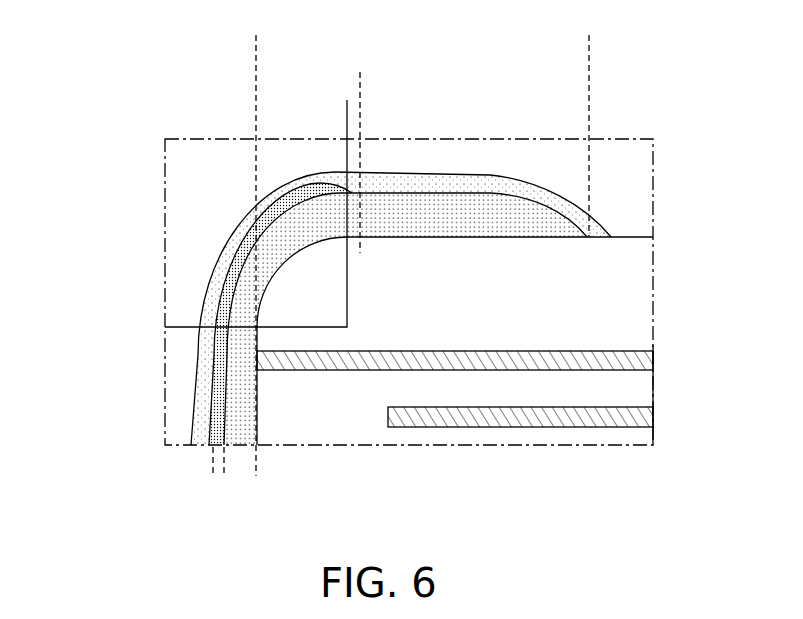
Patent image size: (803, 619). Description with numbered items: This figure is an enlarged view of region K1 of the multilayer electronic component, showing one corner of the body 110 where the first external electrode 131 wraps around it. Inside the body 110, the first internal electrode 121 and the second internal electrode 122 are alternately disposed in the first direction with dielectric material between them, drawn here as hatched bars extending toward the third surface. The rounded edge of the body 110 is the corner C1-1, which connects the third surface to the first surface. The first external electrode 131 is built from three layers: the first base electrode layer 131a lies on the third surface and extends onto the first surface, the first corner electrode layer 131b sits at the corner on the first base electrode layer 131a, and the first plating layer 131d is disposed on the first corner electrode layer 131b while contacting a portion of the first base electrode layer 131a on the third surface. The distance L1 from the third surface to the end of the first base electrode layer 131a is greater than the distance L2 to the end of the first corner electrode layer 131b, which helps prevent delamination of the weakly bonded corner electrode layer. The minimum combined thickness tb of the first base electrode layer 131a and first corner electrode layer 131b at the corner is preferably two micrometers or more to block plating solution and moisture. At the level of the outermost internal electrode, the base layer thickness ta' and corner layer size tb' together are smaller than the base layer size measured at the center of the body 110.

The body 110 is at (640, 287).
The first internal electrode 121 is at (638, 360).
The second internal electrode 122 is at (638, 417).
The first external electrode 131 is at (322, 308).
The first base electrode layer 131a is at (257, 228).
The first corner electrode layer 131b is at (240, 273).
The first plating layer 131d is at (80, 178).
The distance to end of first base electrode layer L1 is at (256, 41).
The distance to end of first corner electrode layer L2 is at (256, 79).
The minimum combined thickness at first corner tb is at (275, 182).
The size of first corner electrode layer at outermost internal electrode tb' is at (231, 488).
The thickness of first base electrode layer at outermost internal electrode ta' is at (244, 488).
The 1-1 corner C1-1 is at (300, 253).
The region K1 is at (433, 518).